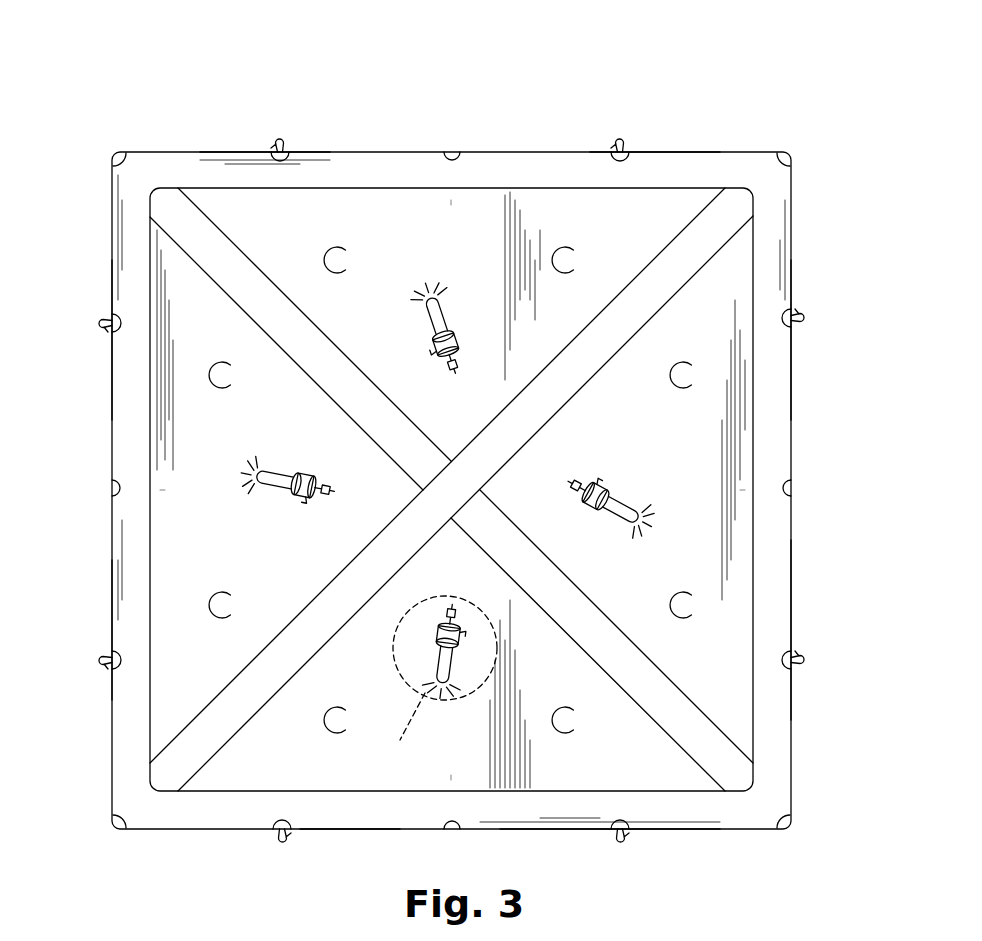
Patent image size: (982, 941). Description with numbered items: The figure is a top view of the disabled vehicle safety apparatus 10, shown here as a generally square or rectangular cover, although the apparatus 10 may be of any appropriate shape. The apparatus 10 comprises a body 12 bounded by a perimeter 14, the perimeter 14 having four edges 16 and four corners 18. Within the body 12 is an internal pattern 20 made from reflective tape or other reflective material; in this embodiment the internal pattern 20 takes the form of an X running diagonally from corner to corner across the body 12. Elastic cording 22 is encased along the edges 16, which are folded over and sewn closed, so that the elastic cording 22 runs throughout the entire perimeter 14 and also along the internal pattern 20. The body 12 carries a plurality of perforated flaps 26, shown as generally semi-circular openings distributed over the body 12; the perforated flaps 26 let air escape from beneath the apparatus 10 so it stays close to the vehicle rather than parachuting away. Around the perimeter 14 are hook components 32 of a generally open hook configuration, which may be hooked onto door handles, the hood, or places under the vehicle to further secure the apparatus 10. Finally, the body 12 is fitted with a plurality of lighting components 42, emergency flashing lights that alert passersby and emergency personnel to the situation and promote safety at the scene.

The disabled vehicle safety apparatus 10 is at (515, 76).
The body 12 is at (452, 490).
The perimeter 14 is at (528, 184).
The edges 16 is at (352, 150).
The corners 18 is at (116, 150).
The internal pattern 20 is at (451, 489).
The elastic cording 22 is at (453, 148).
The perforated flaps 26 is at (350, 247).
The hook components 32 is at (282, 834).
The lighting components 42 is at (448, 316).